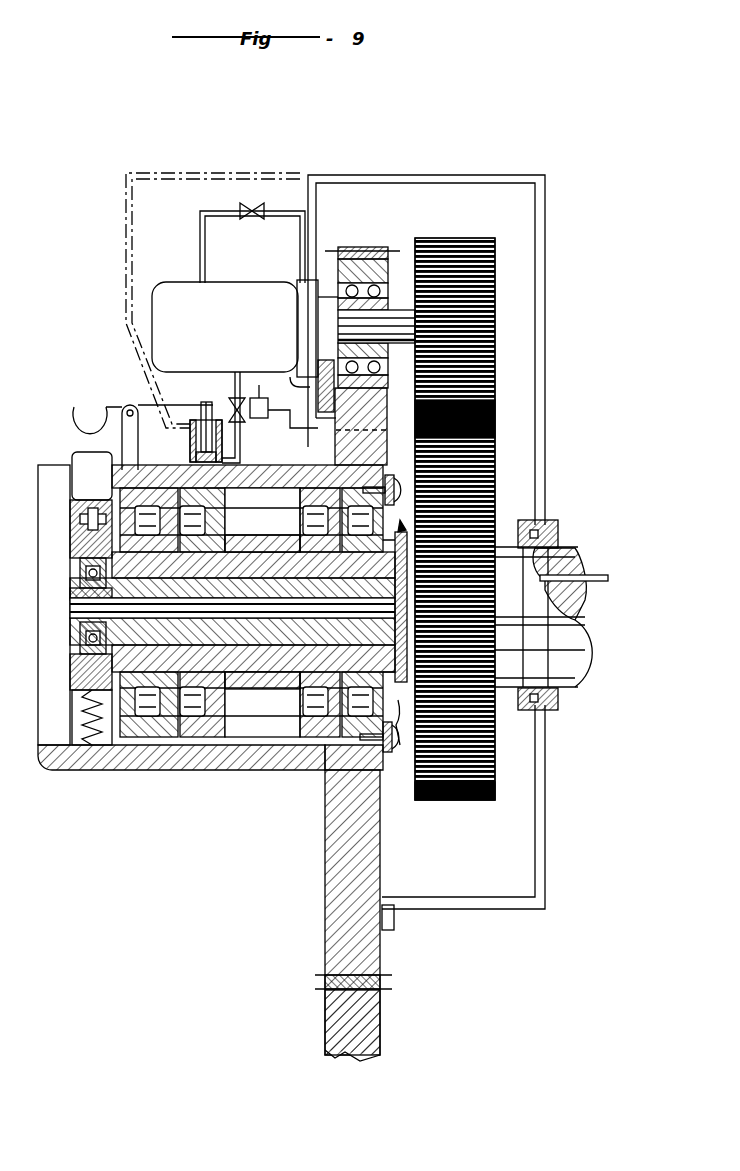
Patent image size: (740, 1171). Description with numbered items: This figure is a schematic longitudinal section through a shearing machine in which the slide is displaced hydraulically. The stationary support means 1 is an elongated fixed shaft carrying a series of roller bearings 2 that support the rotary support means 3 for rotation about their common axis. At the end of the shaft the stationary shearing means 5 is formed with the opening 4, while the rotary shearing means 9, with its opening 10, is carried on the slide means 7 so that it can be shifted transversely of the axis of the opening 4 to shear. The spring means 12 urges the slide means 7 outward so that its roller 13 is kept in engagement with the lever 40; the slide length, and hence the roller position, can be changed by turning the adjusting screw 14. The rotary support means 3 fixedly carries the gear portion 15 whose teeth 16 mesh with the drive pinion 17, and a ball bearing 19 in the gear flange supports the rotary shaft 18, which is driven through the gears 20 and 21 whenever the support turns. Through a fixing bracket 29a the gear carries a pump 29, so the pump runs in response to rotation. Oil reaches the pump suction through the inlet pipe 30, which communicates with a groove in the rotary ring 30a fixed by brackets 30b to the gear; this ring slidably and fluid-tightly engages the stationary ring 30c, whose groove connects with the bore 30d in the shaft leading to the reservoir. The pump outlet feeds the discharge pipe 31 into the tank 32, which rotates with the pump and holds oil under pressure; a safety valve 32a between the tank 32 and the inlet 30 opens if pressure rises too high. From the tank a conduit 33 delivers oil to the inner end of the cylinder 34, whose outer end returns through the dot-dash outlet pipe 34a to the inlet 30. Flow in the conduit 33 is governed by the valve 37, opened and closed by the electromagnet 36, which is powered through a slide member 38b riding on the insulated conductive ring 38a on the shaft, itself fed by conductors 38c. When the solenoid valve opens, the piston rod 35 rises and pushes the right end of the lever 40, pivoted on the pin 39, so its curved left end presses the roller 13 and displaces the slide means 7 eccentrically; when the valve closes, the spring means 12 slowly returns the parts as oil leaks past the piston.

The stationary support means 1 is at (572, 676).
The roller bearings 2 is at (300, 703).
The rotary support means 3 is at (165, 770).
The opening 4 is at (232, 630).
The stationary shearing means 5 is at (250, 642).
The slide means 7 is at (78, 680).
The rotary shearing means 9 is at (78, 598).
The opening 10 is at (80, 612).
The spring means 12 is at (92, 740).
The roller 13 is at (72, 462).
The adjusting screw 14 is at (80, 520).
The gear portion 15 is at (375, 878).
The teeth 16 is at (374, 982).
The drive gear or pinion 17 is at (373, 1022).
The rotary shaft 18 is at (397, 320).
The ball bearing 19 is at (340, 280).
The gear 20 is at (488, 302).
The gear 21 is at (488, 762).
The pump 29 is at (300, 300).
The fixing bracket 29a is at (336, 435).
The inlet pipe 30 is at (318, 268).
The rotary ring 30a is at (562, 522).
The brackets 30b is at (542, 875).
The stationary ring 30c is at (560, 540).
The bore 30d is at (600, 583).
The discharge pipe 31 is at (312, 388).
The tank 32 is at (222, 290).
The safety valve 32a is at (246, 205).
The conduit 33 is at (241, 430).
The cylinder 34 is at (190, 442).
The outlet pipe 34a is at (127, 318).
The piston rod or ram 35 is at (200, 425).
The electromagnet 36 is at (284, 399).
The valve 37 is at (228, 404).
The conductive ring 38a is at (405, 540).
The slide member 38b is at (402, 520).
The conductors 38c is at (387, 750).
The pin 39 is at (128, 404).
The lever 40 is at (84, 420).